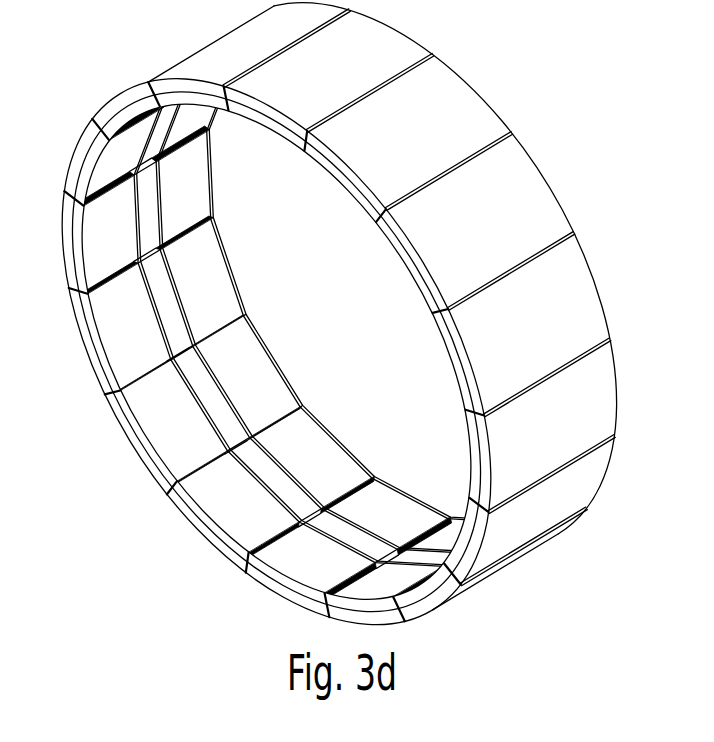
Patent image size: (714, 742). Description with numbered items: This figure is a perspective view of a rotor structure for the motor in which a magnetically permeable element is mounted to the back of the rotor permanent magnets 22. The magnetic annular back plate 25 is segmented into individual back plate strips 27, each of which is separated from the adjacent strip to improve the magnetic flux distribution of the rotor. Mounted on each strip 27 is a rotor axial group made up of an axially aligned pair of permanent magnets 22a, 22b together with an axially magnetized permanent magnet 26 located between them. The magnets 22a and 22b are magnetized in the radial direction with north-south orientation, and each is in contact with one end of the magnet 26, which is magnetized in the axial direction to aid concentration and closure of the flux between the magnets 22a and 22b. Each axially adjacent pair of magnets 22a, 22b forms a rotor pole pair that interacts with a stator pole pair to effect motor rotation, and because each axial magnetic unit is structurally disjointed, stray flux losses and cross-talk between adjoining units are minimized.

The rotor permanent magnets 22 is at (287, 346).
The rotor permanent magnet 22a is at (272, 311).
The rotor permanent magnet 22b is at (138, 440).
The magnetic annular back plate 25 is at (527, 102).
The axially magnetized permanent magnet 26 is at (287, 347).
The back plate strip 27 is at (567, 200).